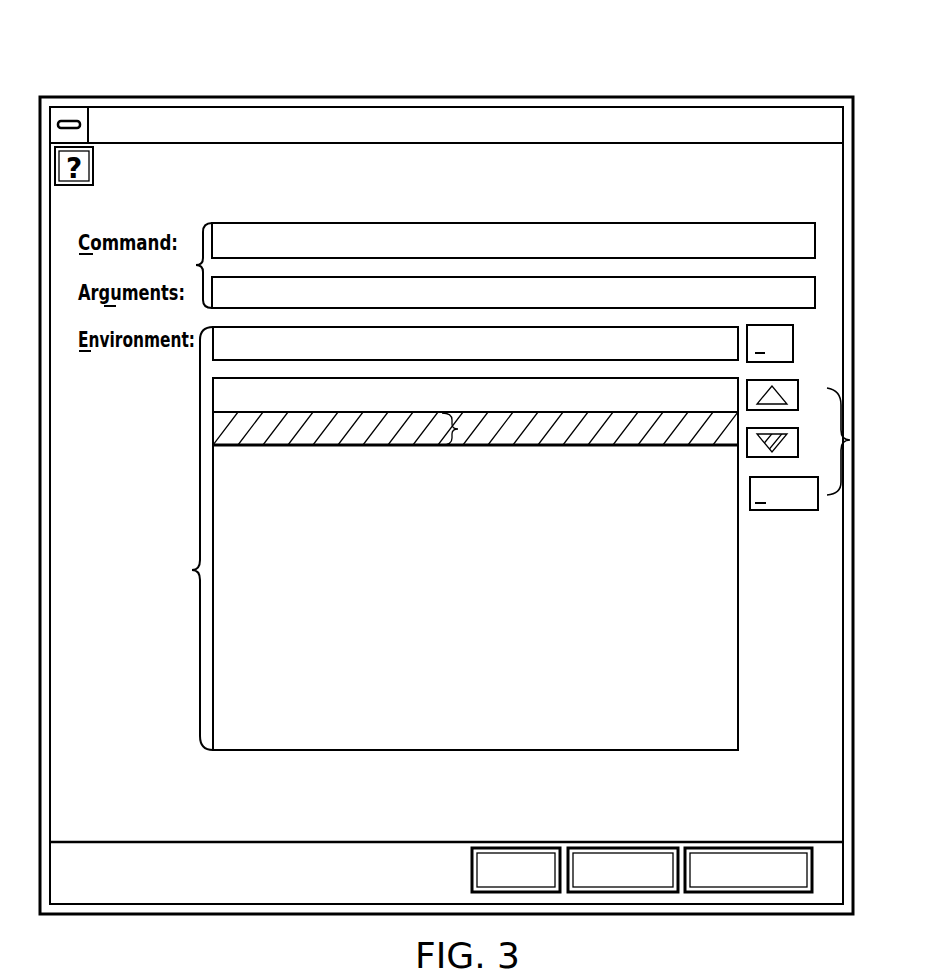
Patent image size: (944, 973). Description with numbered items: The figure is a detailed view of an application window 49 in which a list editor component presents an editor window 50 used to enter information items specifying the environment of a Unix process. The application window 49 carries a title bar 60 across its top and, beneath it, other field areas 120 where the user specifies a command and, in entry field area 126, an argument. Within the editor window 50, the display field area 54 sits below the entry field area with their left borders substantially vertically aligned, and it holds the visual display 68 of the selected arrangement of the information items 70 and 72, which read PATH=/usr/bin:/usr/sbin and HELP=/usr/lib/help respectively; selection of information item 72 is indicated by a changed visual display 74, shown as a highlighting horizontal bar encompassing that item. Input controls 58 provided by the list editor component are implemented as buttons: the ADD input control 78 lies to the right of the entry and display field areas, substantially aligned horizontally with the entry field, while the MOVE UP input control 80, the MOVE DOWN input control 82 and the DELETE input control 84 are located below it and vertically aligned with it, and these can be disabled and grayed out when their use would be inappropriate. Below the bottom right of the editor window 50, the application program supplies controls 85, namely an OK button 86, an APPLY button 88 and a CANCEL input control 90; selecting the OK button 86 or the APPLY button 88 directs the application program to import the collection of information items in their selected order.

The application window 49 is at (505, 96).
The title bar 60 is at (588, 127).
The field areas 120 is at (196, 265).
The entry field area 126 is at (466, 292).
The information item 70 is at (308, 388).
The ADD input control 78 is at (773, 345).
The MOVE UP input control 80 is at (747, 385).
The MOVE DOWN input control 82 is at (747, 445).
The DELETE input control 84 is at (805, 510).
The input controls 58 is at (785, 465).
The editor window 50 is at (429, 557).
The display field area 54 is at (322, 733).
The information item 72 is at (388, 433).
The visual display of selected arrangement 68 is at (446, 445).
The changed visual display 74 is at (632, 432).
The controls 85 is at (633, 837).
The OK button 86 is at (530, 848).
The APPLY button 88 is at (648, 848).
The CANCEL input control 90 is at (785, 848).